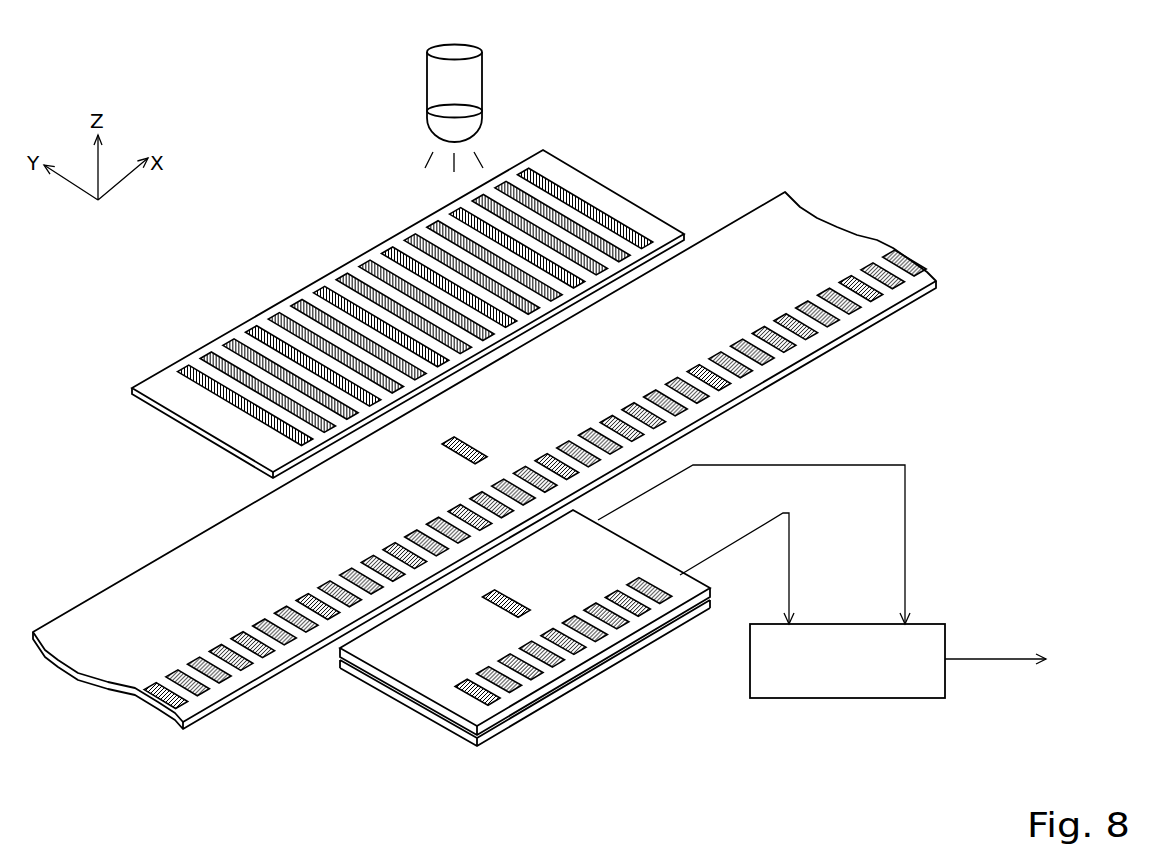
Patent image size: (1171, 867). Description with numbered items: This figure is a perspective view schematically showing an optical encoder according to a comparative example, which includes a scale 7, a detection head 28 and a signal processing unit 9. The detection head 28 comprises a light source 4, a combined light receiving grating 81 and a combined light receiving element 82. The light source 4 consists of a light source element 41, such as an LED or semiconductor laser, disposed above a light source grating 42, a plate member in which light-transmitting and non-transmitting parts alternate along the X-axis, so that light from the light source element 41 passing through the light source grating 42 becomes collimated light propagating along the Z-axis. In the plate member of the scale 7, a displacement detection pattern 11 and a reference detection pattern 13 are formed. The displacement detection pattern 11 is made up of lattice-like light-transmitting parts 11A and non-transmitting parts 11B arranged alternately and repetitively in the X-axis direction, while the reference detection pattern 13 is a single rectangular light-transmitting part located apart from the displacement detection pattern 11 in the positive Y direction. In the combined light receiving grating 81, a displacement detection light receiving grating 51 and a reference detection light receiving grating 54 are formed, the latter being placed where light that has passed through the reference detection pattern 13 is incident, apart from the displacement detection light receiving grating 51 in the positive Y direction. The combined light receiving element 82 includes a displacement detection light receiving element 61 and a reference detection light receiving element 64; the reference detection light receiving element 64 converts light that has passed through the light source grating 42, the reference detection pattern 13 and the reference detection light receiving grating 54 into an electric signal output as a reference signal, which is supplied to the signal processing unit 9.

The light source 4 is at (408, 259).
The light source element 41 is at (482, 83).
The light source grating 42 is at (585, 183).
The scale 7 is at (515, 423).
The displacement detection pattern 11 is at (922, 252).
The light-transmitting parts 11A is at (866, 300).
The non-transmitting parts 11B is at (846, 313).
The reference detection pattern 13 is at (460, 443).
The sensor unit 28 is at (599, 443).
The displacement detection light receiving grating 51 is at (655, 581).
The reference detection light receiving grating 54 is at (523, 596).
The displacement detection light receiving element 61 is at (448, 727).
The reference detection light receiving element 64 is at (369, 680).
The combined light receiving grating 81 is at (705, 580).
The combined light receiving element 82 is at (525, 669).
The signal processing unit 9 is at (848, 699).